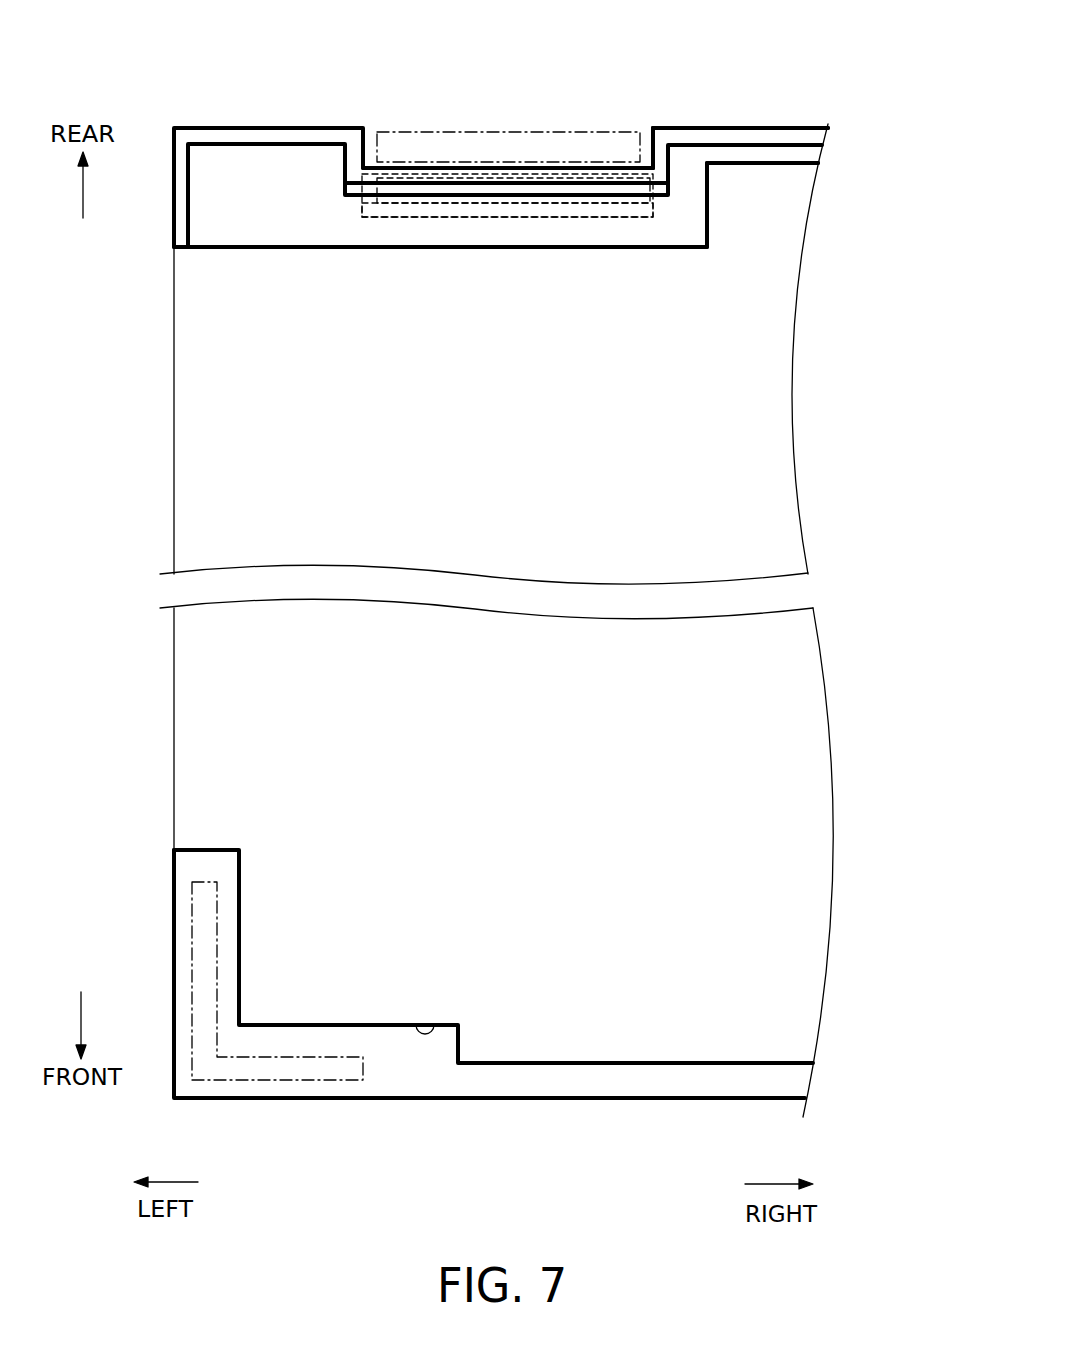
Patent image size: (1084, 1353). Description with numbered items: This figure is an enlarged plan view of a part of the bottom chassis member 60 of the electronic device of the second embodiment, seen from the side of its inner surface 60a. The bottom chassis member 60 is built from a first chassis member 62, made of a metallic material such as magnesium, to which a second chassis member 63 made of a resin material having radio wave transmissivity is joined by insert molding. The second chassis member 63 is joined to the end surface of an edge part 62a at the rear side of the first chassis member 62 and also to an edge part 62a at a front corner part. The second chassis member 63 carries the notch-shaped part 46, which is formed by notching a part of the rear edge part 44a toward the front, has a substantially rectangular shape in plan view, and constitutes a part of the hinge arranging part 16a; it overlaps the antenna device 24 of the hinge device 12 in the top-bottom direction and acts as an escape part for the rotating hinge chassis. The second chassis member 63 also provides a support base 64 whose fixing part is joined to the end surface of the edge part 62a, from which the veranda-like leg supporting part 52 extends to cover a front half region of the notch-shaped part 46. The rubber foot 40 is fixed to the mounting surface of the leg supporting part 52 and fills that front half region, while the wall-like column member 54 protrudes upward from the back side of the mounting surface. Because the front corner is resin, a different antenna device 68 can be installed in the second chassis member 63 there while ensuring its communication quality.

The hinge device 12 is at (508, 82).
The antenna device 24 is at (455, 131).
The hinge arranging part 16a is at (652, 157).
The rear edge part 44a is at (738, 128).
The leg supporting part 52 is at (400, 168).
The column member 54 is at (432, 175).
The rubber foot 40 is at (590, 205).
The notch-shaped part 46 is at (482, 208).
The edge part 62a is at (215, 243).
The second chassis member 63 is at (273, 158).
The support base 64 is at (708, 205).
The inner surface 60a is at (774, 443).
The first chassis member 62 is at (562, 681).
The bottom chassis member 60 is at (795, 839).
The antenna device 68 is at (190, 928).